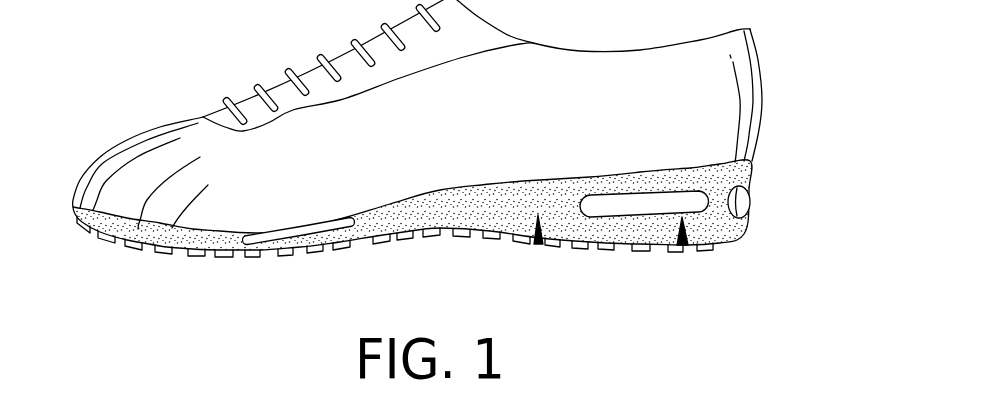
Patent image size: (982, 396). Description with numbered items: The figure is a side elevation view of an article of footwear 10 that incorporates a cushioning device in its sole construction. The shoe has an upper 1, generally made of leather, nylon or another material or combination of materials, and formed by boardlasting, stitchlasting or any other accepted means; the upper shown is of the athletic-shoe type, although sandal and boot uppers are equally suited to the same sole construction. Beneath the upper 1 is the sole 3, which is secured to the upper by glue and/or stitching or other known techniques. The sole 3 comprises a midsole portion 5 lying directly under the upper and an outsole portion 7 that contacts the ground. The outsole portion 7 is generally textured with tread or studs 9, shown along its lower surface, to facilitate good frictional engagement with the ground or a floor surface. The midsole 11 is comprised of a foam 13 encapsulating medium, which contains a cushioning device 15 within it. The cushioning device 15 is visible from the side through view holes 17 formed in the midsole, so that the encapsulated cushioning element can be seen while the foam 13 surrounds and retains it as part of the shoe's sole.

The article of footwear 10 is at (236, 42).
The upper 1 is at (735, 53).
The sole 3 is at (452, 254).
The midsole portion 5 is at (735, 173).
The outsole portion 7 is at (150, 253).
The tread or studs 9 is at (250, 251).
The midsole 11 is at (539, 244).
The foam 13 is at (633, 230).
The cushioning device 15 is at (693, 203).
The view holes 17 is at (687, 245).